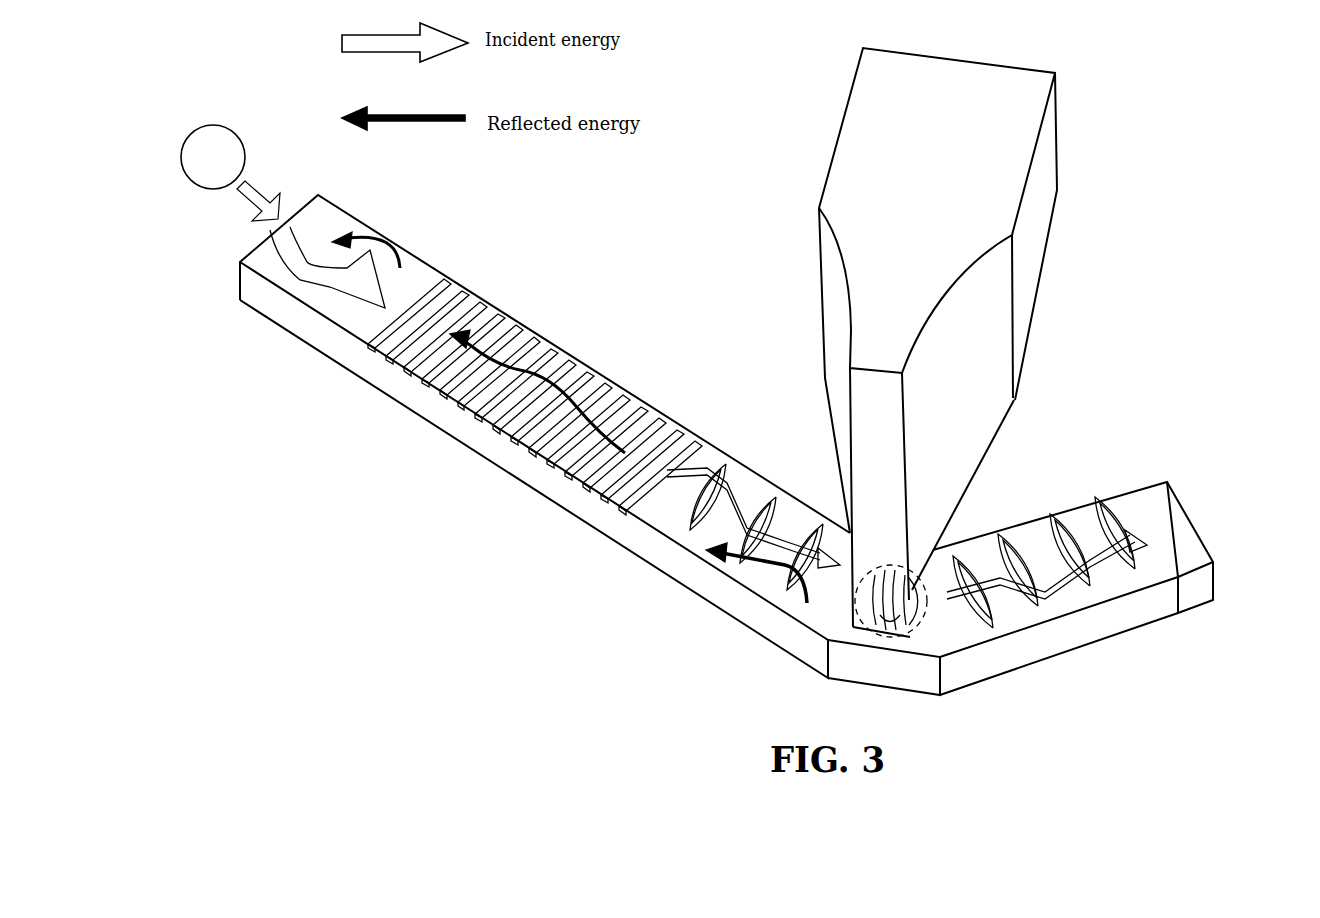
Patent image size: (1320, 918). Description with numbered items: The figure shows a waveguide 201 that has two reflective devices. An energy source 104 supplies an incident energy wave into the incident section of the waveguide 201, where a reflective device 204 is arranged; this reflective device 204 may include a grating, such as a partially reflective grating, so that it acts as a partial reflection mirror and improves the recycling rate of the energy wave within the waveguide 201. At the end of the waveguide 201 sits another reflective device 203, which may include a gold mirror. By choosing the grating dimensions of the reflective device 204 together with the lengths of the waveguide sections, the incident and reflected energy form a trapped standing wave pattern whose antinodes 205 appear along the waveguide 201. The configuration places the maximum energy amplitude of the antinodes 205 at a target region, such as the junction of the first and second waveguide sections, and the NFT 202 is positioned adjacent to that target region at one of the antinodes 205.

The energy source 104 is at (214, 118).
The waveguide 201 is at (303, 340).
The NFT 202 is at (925, 518).
The reflective device 203 is at (1150, 482).
The reflective device 204 is at (520, 315).
The antinodes 205 is at (790, 540).